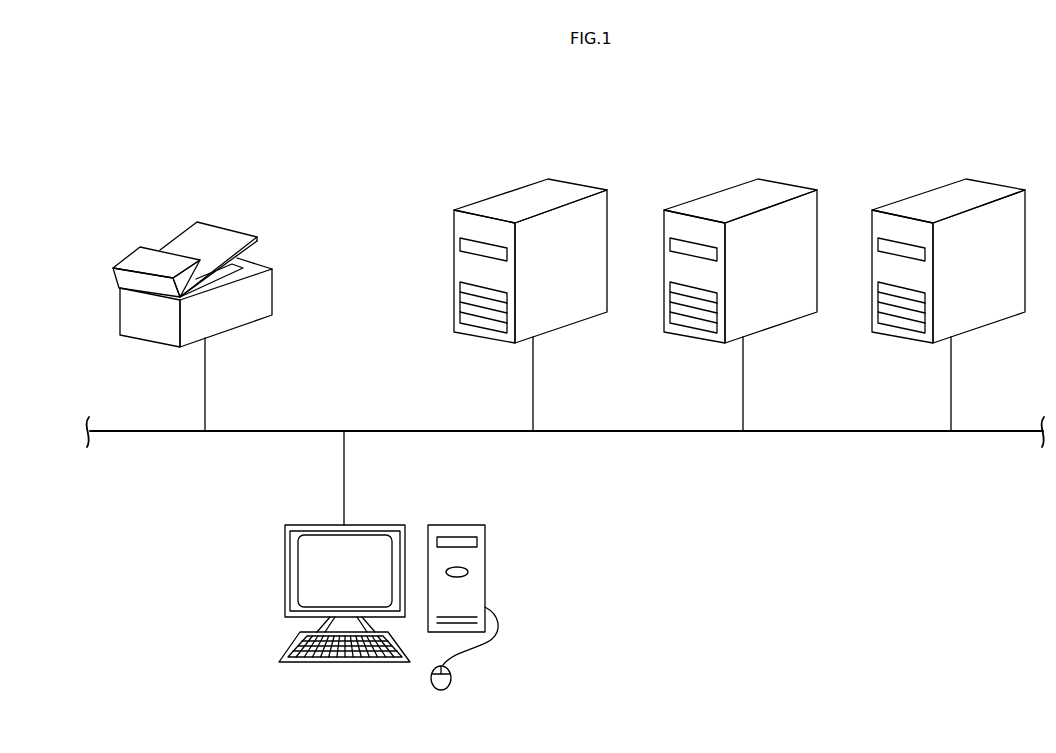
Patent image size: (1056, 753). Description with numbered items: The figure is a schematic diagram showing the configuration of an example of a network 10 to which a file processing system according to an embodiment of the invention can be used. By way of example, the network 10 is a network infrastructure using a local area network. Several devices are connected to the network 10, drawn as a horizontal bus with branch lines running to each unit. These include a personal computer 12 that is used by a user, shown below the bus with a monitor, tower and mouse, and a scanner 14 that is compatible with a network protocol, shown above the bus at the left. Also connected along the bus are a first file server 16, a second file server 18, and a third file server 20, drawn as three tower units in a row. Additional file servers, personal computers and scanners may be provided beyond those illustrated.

The network 10 is at (800, 480).
The personal computer 12 is at (515, 545).
The scanner 14 is at (187, 245).
The first file server 16 is at (530, 195).
The second file server 18 is at (740, 282).
The third file server 20 is at (948, 282).